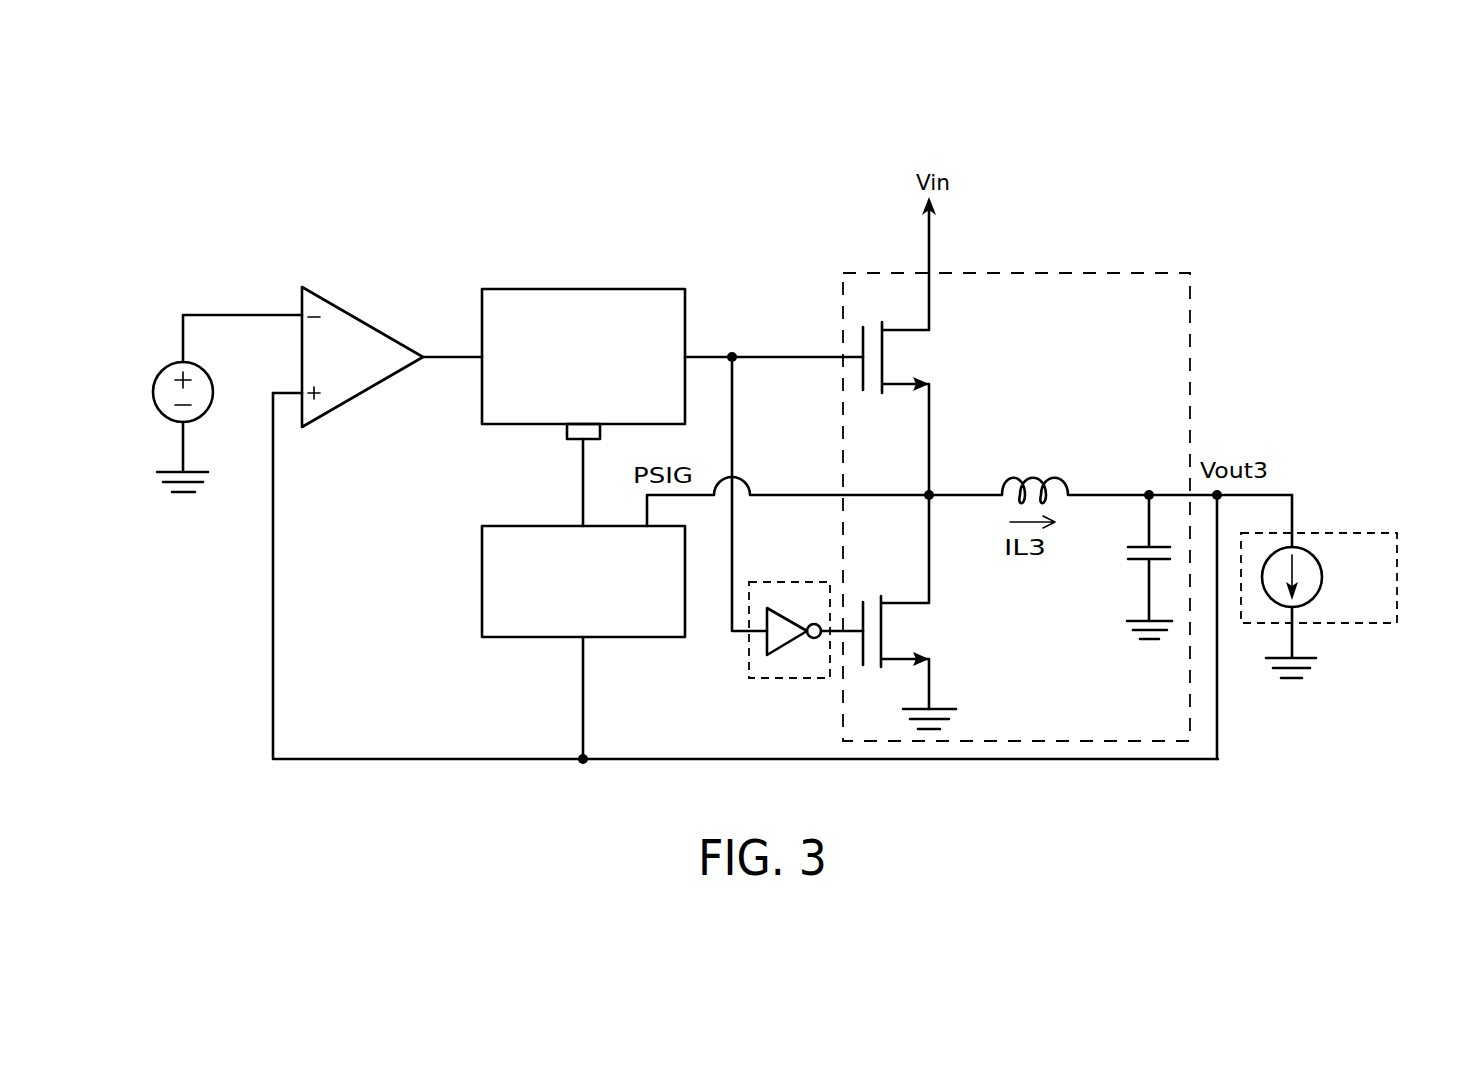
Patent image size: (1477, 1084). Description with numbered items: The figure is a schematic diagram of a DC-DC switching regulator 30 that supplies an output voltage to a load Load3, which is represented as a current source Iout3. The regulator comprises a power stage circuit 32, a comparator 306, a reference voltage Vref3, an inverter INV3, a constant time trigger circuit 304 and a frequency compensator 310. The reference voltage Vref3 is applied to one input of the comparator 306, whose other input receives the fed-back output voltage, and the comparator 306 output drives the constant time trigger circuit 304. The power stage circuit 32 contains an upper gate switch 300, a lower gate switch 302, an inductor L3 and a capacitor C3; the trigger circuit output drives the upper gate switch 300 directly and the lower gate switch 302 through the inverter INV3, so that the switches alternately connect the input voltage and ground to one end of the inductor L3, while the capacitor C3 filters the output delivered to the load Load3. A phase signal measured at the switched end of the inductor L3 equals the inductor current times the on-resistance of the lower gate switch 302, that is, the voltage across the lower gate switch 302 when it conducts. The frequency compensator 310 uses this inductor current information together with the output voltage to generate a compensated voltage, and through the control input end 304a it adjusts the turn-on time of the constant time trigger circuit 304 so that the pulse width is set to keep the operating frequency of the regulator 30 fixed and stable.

The DC-DC switching regulator 30 is at (1177, 190).
The power stage circuit 32 is at (1172, 273).
The upper gate switch 300 is at (947, 366).
The lower gate switch 302 is at (948, 631).
The constant time trigger circuit 304 is at (514, 289).
The control input end 304a is at (567, 440).
The comparator 306 is at (365, 320).
The frequency compensator 310 is at (515, 526).
The reference voltage Vref3 is at (195, 403).
The inverter INV3 is at (748, 658).
The inductor L3 is at (1110, 479).
The capacitor C3 is at (1108, 561).
The load Load3 is at (1348, 586).
The current source Iout3 is at (1326, 577).